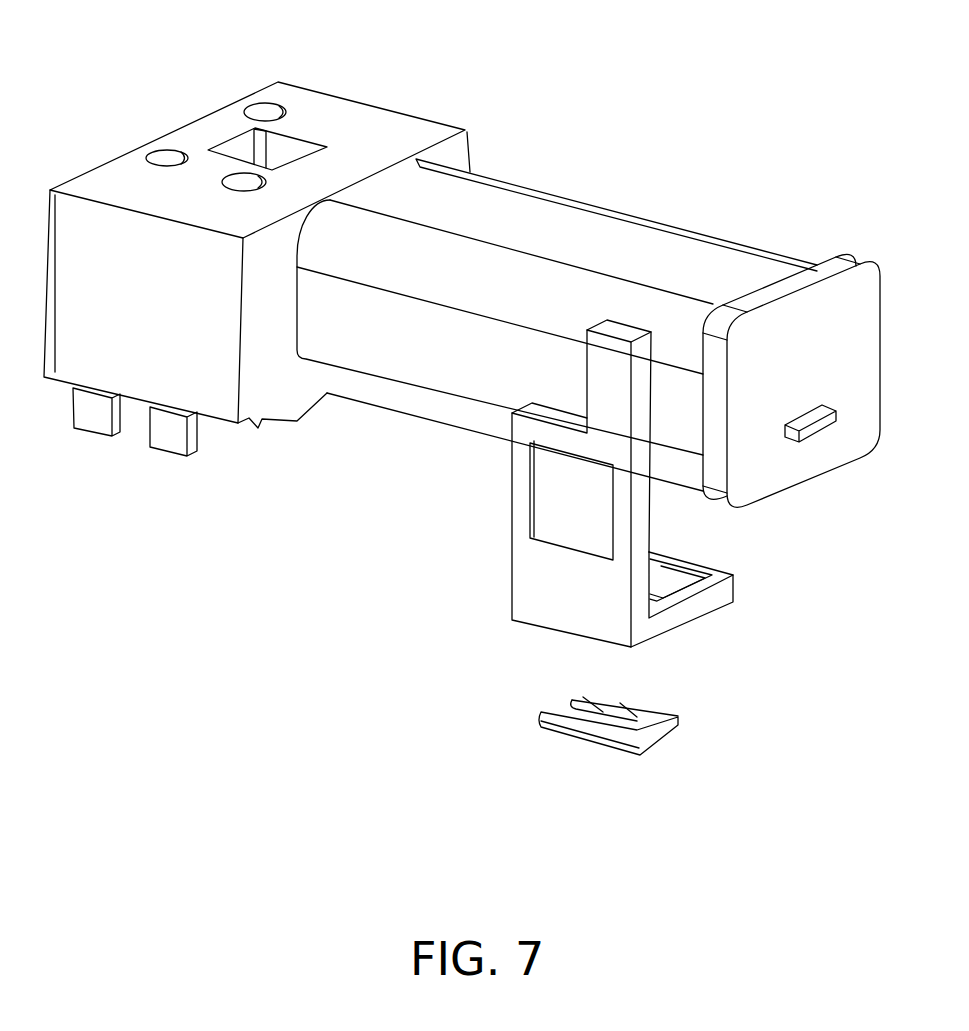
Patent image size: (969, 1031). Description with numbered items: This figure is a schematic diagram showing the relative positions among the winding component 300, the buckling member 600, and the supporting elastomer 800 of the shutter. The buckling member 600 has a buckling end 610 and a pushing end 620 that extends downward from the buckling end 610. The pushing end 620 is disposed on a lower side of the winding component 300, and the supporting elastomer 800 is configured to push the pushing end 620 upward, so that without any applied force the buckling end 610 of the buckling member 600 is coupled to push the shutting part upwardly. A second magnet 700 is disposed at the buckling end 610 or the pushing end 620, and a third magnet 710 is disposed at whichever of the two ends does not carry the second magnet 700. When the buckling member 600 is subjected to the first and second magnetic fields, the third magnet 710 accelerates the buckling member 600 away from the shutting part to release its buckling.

The winding component 300 is at (160, 99).
The buckling member 600 is at (617, 399).
The buckling end 610 is at (612, 357).
The pushing end 620 is at (737, 616).
The second magnet 700 is at (543, 473).
The third magnet 710 is at (660, 567).
The supporting elastomer 800 is at (579, 749).